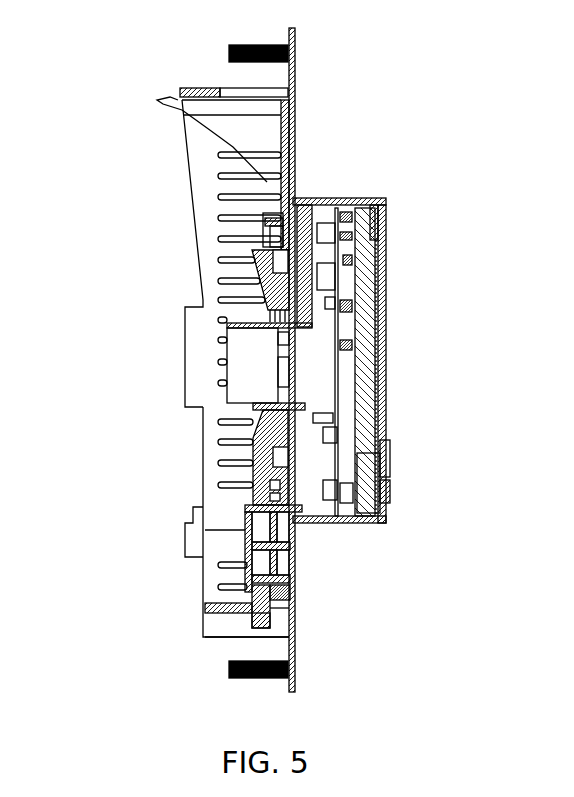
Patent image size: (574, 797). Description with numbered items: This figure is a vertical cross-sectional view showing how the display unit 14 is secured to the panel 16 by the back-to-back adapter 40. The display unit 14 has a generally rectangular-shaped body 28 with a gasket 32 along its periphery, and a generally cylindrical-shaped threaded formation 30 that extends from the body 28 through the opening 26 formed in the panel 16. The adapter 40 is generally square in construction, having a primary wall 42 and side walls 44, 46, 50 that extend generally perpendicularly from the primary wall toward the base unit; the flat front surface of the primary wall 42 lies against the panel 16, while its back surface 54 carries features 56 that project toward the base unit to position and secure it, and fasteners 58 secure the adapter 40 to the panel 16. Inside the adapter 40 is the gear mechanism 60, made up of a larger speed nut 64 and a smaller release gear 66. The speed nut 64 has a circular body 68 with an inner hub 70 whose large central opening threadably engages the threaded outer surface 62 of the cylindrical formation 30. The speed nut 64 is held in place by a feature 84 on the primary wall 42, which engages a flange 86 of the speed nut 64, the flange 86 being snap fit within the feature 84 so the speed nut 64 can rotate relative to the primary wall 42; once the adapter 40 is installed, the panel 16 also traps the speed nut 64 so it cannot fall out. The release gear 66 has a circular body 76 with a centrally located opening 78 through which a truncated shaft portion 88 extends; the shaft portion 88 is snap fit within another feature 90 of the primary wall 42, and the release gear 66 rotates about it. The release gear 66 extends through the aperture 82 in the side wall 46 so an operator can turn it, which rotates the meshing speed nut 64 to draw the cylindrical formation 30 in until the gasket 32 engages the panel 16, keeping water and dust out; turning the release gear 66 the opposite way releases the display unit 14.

The display unit 14 is at (392, 202).
The panel 16 is at (297, 74).
The opening 26 is at (348, 352).
The body 28 is at (352, 524).
The cylindrical-shaped threaded formation 30 is at (258, 393).
The gasket 32 is at (302, 200).
The back-to-back adapter 40 is at (172, 565).
The primary wall 42 is at (245, 152).
The side wall 44 is at (194, 87).
The side wall 46 is at (256, 590).
The side wall 50 is at (210, 242).
The back surface 54 is at (230, 186).
The feature 56 is at (155, 104).
The fastener 58 is at (267, 232).
The gear mechanism 60 is at (200, 470).
The threaded outer surface 62 is at (257, 370).
The speed nut 64 is at (257, 304).
The release gear 66 is at (258, 475).
The circular body 68 is at (345, 261).
The inner hub 70 is at (250, 438).
The circular body 76 is at (275, 600).
The centrally located opening 78 is at (272, 578).
The aperture 82 is at (258, 632).
The feature 84 is at (247, 523).
The flange 86 is at (325, 483).
The truncated shaft portion 88 is at (250, 567).
The feature 90 is at (262, 561).